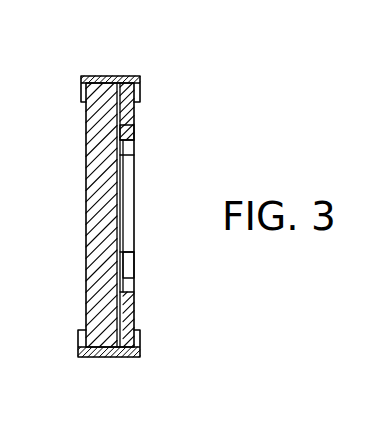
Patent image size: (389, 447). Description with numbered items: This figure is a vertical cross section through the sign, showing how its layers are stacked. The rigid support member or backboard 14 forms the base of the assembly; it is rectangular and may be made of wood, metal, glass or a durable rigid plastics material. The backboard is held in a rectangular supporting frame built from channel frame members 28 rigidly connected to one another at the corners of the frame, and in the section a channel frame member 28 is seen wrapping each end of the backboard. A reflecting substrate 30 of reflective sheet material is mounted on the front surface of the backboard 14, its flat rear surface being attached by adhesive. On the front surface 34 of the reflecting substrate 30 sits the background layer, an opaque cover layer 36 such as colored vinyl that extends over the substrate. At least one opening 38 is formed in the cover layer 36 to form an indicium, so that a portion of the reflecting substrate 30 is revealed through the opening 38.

The backboard 14 is at (87, 259).
The channel frame member 28 is at (103, 75).
The reflecting substrate 30 is at (132, 125).
The opening 38 is at (127, 202).
The front surface 34 is at (130, 253).
The opaque cover layer 36 is at (132, 317).